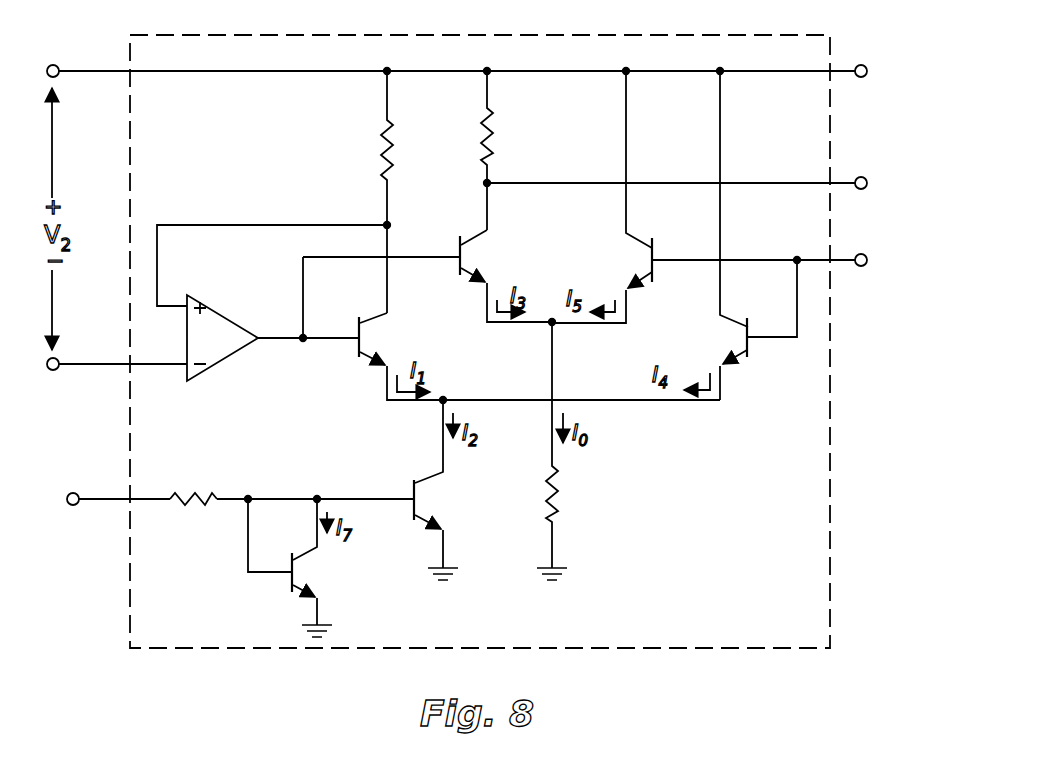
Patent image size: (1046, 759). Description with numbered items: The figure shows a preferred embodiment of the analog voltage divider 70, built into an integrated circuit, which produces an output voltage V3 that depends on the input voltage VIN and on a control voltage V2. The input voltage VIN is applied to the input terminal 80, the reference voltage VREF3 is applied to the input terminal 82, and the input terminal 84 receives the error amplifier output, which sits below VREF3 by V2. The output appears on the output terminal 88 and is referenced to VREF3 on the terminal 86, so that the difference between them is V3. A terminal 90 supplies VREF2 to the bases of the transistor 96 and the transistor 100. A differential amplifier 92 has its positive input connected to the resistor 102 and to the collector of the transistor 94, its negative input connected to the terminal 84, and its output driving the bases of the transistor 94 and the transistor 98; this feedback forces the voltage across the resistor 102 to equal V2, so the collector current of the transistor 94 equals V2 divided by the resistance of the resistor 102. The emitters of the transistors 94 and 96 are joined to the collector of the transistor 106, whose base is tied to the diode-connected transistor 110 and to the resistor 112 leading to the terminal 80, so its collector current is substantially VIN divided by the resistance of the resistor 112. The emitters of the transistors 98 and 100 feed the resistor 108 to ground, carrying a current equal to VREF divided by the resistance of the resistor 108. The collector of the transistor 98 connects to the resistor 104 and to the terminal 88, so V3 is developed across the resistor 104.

The analog voltage divider 70 is at (830, 462).
The input terminal 80 is at (72, 506).
The input terminal 82 is at (58, 77).
The input terminal 84 is at (54, 371).
The terminal 86 is at (862, 64).
The output terminal 88 is at (867, 183).
The terminal 90 is at (864, 266).
The differential amplifier 92 is at (225, 318).
The transistor 94 is at (358, 325).
The transistor 96 is at (750, 347).
The transistor 98 is at (460, 244).
The transistor 100 is at (653, 250).
The resistor 102 is at (381, 157).
The resistor 104 is at (485, 129).
The transistor 106 is at (412, 492).
The resistor 108 is at (560, 480).
The transistor 110 is at (288, 598).
The resistor 112 is at (192, 505).